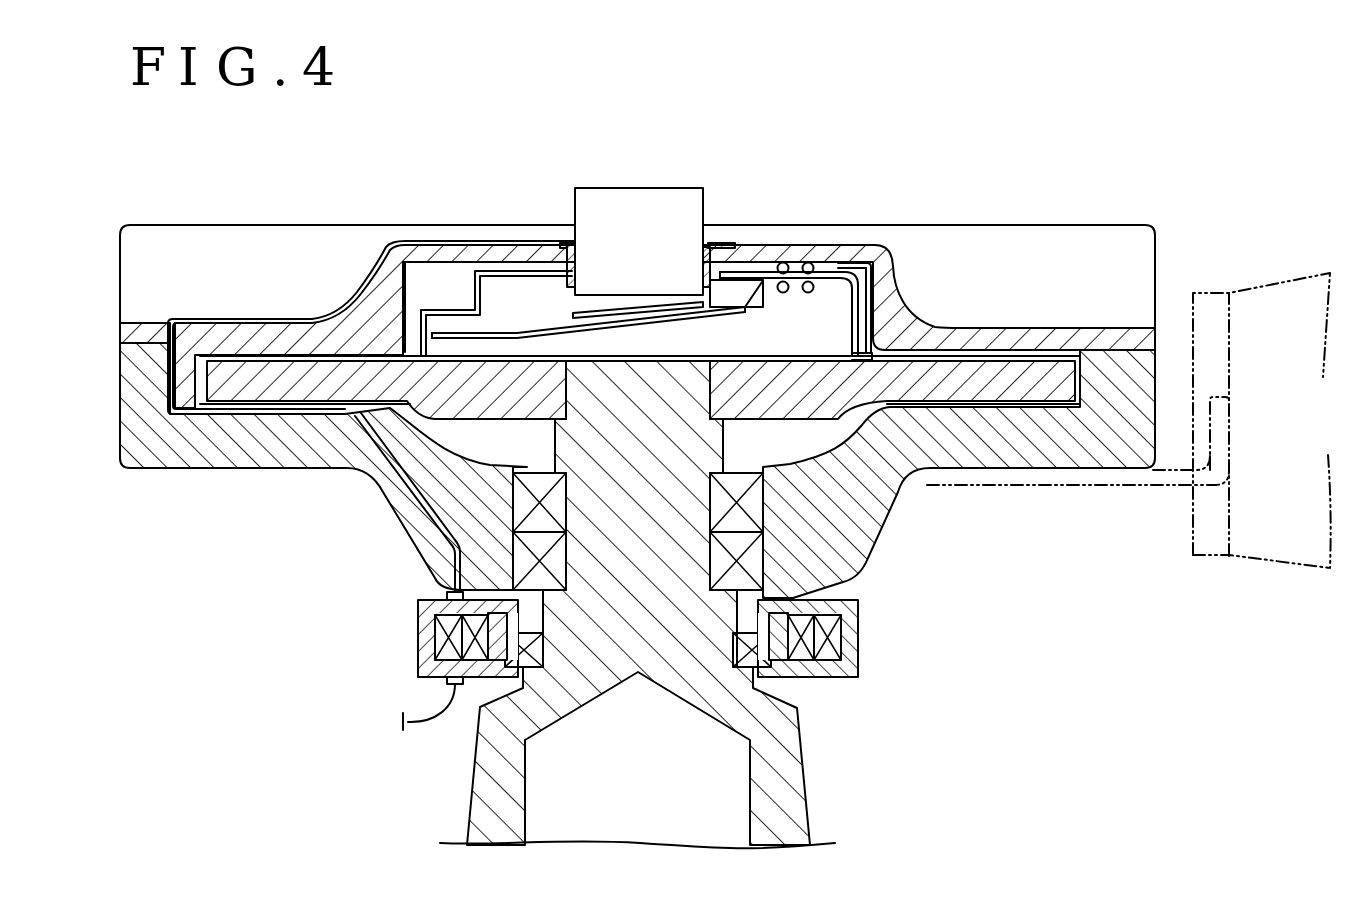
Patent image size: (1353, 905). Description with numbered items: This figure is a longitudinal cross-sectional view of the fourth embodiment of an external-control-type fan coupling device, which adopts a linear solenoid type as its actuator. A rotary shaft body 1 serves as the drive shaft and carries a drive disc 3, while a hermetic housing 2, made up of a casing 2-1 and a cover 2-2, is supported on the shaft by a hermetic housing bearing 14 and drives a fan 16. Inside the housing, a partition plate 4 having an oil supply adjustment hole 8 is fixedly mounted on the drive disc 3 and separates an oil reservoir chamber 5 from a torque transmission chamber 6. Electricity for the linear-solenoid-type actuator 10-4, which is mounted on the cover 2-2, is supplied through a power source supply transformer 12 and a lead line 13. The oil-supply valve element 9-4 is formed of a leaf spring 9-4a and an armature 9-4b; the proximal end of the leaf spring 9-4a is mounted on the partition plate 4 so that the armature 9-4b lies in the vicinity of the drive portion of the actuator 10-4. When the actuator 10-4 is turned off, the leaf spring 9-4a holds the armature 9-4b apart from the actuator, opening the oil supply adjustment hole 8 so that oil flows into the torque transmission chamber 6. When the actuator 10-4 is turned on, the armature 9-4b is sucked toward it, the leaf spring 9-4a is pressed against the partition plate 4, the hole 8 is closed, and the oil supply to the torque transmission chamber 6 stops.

The rotary shaft body 1 is at (790, 750).
The hermetic housing 2 is at (1062, 192).
The casing 2-1 is at (205, 456).
The cover 2-2 is at (122, 338).
The drive disc 3 is at (960, 378).
The partition plate 4 is at (843, 262).
The oil reservoir chamber 5 is at (410, 293).
The torque transmission chamber 6 is at (470, 442).
The oil supply adjustment hole 8 is at (450, 306).
The oil-supply valve element 9-4 is at (540, 292).
The leaf spring 9-4a is at (735, 300).
The armature 9-4b is at (620, 305).
The linear solenoid-type actuator 10-4 is at (660, 205).
The power source supply transformer 12 is at (398, 633).
The lead line 13 is at (270, 313).
The hermetic housing bearing 14 is at (760, 507).
The fan 16 is at (1275, 547).